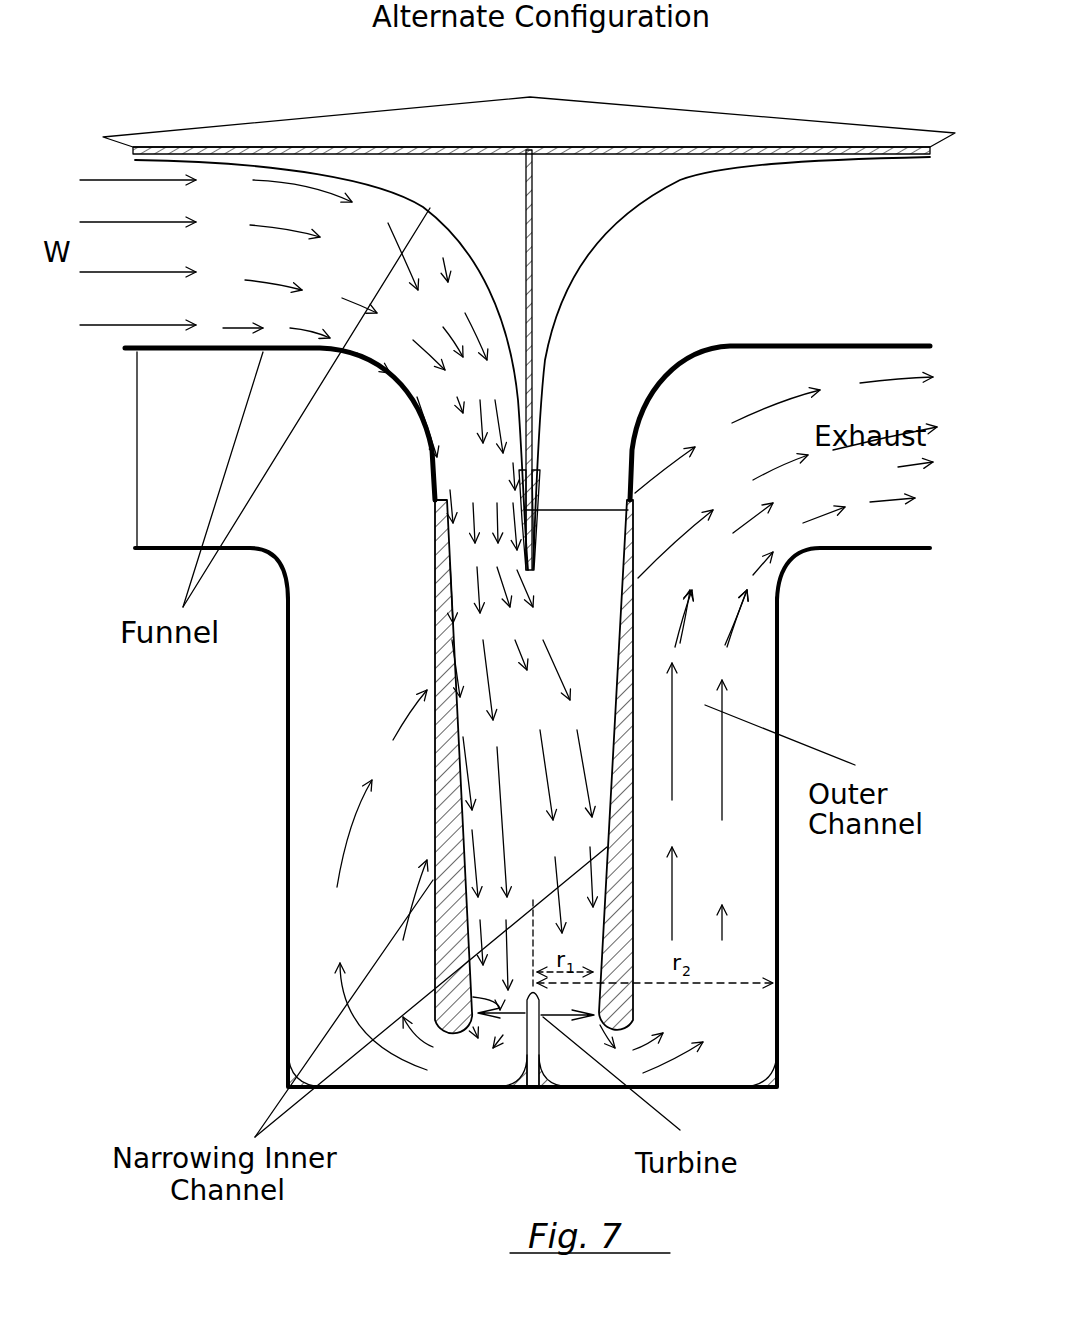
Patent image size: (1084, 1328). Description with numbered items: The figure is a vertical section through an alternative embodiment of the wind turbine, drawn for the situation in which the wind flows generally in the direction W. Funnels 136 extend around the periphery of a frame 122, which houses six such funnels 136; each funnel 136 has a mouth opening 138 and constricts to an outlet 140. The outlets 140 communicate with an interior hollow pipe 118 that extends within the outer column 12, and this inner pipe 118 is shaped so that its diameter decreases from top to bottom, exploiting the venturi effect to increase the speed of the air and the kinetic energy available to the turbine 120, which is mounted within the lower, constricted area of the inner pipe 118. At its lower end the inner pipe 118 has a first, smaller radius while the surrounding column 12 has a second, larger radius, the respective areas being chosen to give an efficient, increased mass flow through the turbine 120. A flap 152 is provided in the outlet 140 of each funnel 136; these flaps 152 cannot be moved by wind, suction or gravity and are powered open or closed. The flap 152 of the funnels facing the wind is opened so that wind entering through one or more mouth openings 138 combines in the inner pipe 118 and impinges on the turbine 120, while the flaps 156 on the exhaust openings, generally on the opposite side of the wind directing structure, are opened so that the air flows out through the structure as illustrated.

The outer casing 12 is at (780, 915).
The inner hollow pipe 118 is at (630, 653).
The turbine 120 is at (498, 988).
The frame 122 is at (533, 181).
The funnel 136 is at (680, 180).
The mouth opening 138 is at (529, 179).
The outlet 140 is at (576, 527).
The flap 152 is at (614, 503).
The flap 156 is at (135, 510).